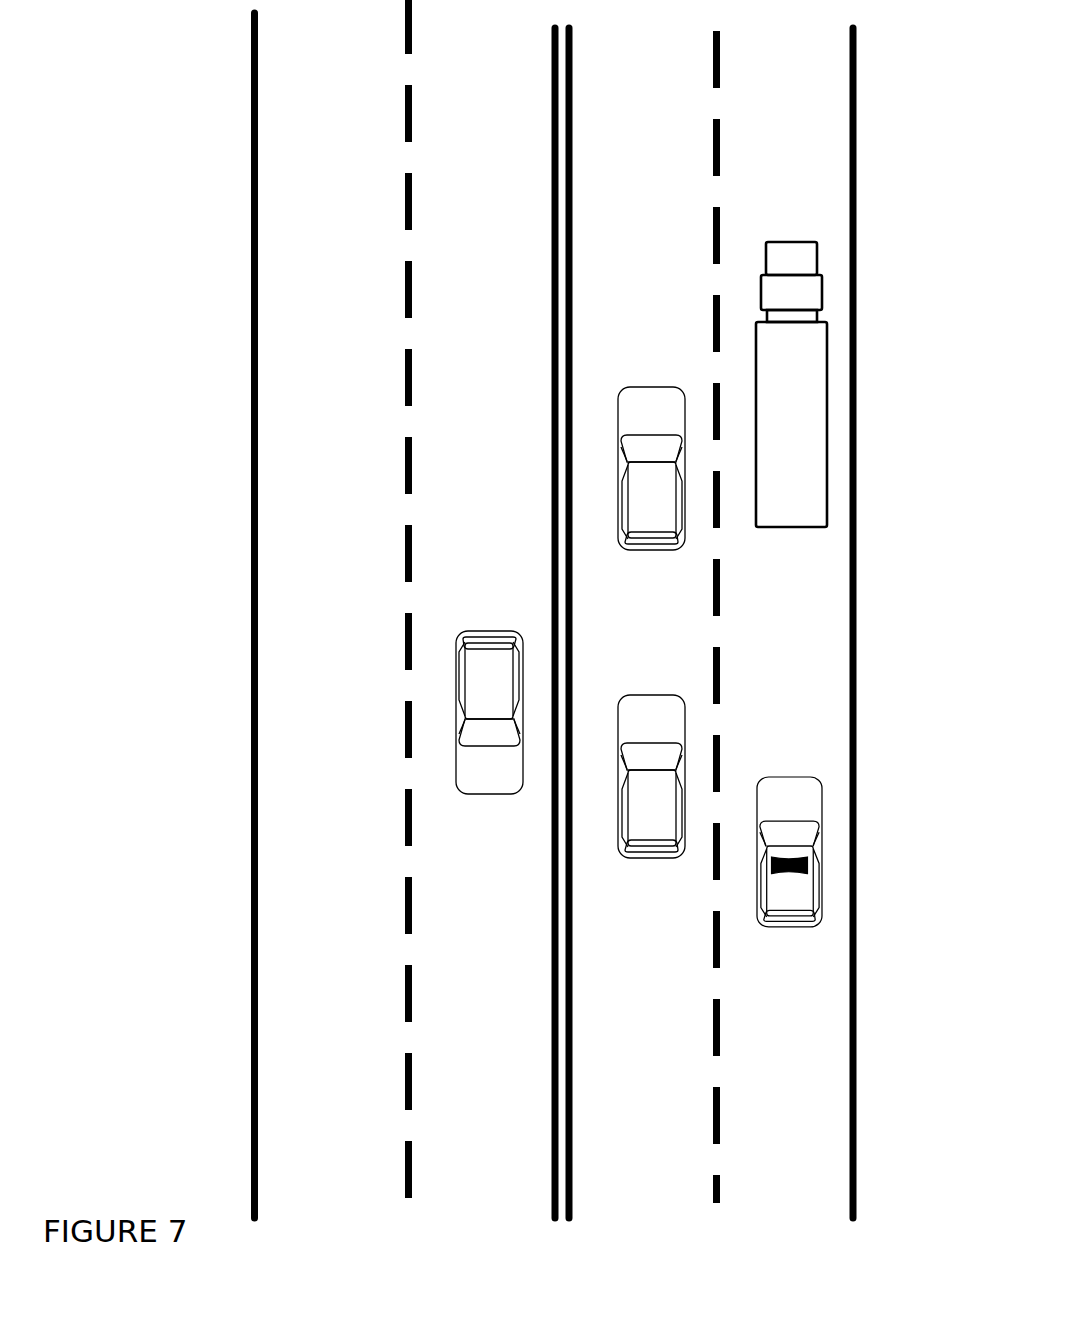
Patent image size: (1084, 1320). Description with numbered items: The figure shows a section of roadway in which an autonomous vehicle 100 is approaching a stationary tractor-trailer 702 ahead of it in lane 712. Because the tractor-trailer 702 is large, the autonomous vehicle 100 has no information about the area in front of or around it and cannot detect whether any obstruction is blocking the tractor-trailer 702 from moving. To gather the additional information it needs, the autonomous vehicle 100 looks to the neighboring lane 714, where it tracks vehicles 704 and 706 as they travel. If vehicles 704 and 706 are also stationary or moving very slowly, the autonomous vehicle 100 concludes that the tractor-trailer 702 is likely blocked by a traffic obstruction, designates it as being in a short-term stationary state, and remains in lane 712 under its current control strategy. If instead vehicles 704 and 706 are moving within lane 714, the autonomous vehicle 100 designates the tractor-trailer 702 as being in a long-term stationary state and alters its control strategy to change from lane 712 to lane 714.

The tractor-trailer 702 is at (813, 402).
The vehicle 704 is at (667, 518).
The vehicle 706 is at (686, 735).
The autonomous vehicle 100 is at (788, 890).
The lane 712 is at (805, 1035).
The lane 714 is at (662, 1082).